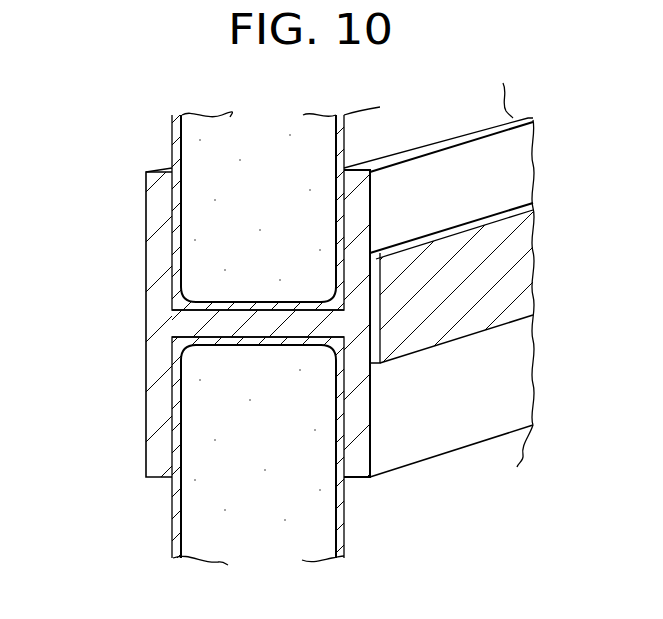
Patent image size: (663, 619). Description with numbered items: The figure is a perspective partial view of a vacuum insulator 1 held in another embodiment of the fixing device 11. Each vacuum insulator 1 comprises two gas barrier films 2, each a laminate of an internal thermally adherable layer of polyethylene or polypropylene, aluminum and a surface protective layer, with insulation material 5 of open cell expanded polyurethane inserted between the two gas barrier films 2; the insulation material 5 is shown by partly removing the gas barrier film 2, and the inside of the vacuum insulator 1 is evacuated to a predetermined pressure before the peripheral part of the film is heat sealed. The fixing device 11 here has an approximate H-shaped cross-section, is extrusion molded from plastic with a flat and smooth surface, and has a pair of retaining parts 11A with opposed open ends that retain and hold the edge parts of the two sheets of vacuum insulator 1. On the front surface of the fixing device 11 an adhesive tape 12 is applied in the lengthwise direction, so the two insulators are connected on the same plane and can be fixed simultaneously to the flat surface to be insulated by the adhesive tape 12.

The vacuum insulator 1 is at (254, 316).
The gas barrier film 2 is at (172, 148).
The insulation material 5 is at (210, 137).
The fixing device 11 is at (210, 322).
The retaining part 11A is at (172, 217).
The adhesive tape 12 is at (515, 261).